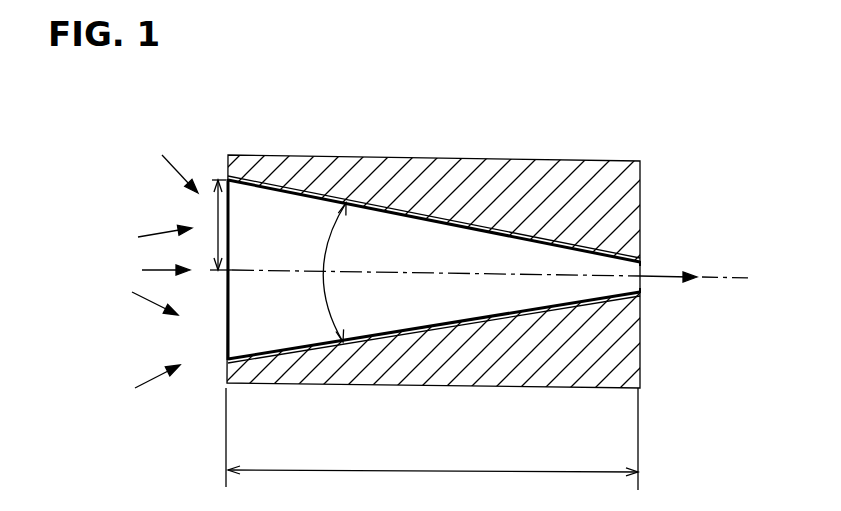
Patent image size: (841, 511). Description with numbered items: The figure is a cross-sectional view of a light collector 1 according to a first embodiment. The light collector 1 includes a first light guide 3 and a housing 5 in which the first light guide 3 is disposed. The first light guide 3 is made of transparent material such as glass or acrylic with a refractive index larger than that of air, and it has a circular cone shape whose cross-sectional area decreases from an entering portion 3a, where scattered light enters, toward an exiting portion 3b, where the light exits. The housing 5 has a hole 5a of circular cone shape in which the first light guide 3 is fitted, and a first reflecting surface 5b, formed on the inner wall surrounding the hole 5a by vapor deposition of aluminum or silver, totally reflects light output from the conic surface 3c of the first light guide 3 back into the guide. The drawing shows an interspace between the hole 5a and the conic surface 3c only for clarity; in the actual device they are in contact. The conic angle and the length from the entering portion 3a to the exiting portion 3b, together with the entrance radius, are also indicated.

The light collector 1 is at (534, 78).
The first light guide 3 is at (563, 257).
The entering portion 3a is at (228, 339).
The exiting portion 3b is at (642, 268).
The conic surface 3c is at (378, 200).
The housing 5 is at (615, 345).
The hole 5a is at (452, 218).
The first reflecting surface 5b is at (497, 222).